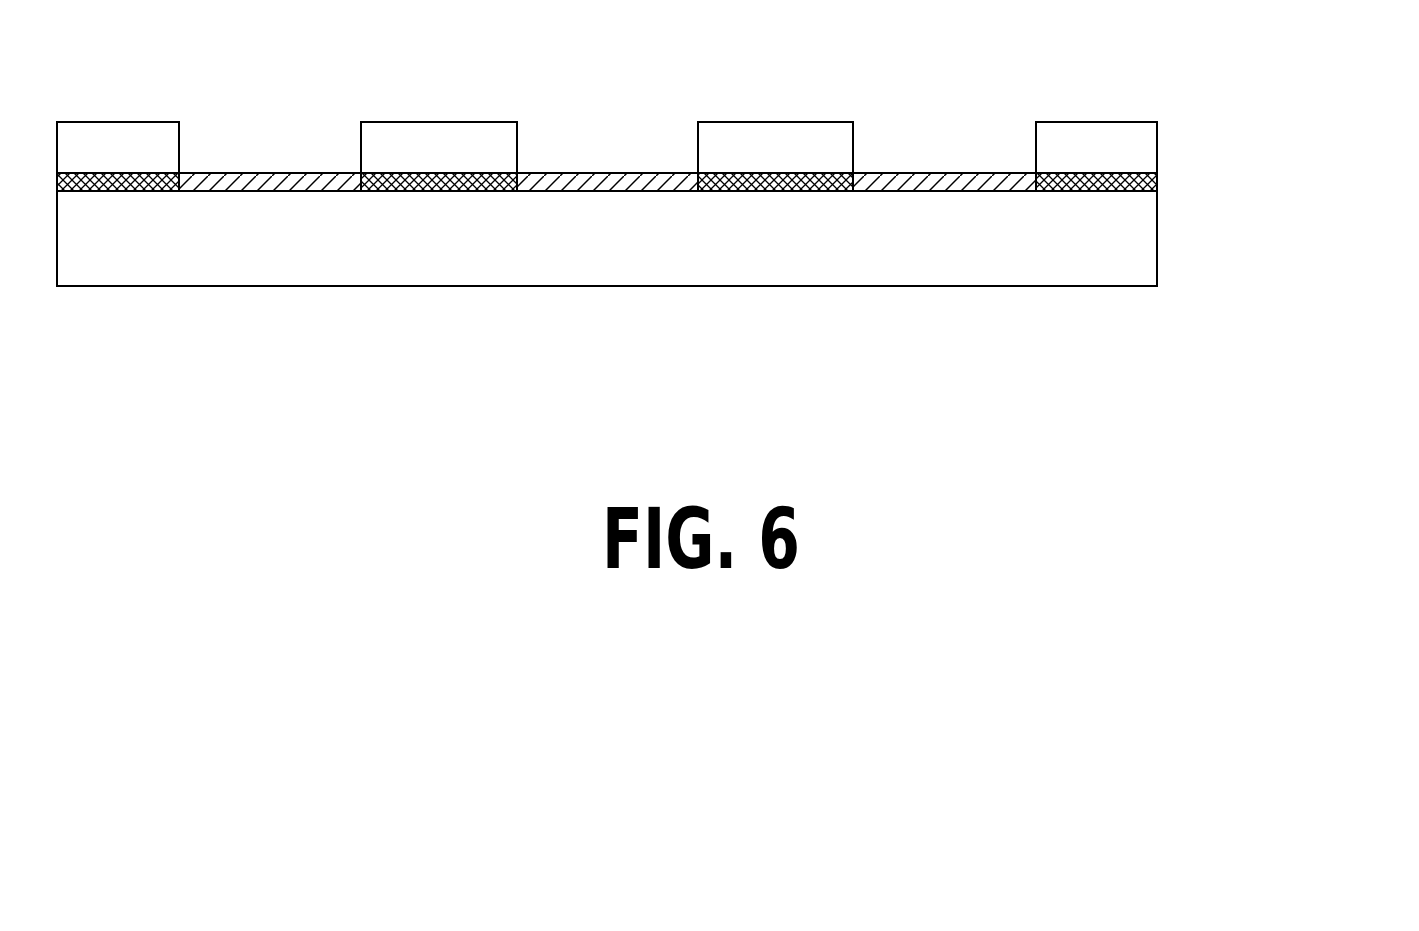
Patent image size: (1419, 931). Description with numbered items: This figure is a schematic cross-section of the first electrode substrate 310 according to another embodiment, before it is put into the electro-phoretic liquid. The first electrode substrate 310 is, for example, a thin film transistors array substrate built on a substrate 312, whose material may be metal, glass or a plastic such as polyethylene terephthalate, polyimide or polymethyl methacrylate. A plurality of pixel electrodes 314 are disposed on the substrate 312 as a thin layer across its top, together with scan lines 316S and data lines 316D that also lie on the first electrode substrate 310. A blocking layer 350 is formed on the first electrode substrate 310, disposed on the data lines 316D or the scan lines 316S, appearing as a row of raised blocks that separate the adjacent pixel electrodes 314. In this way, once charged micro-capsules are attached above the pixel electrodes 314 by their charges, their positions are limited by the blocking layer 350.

The first electrode substrate 310 is at (732, 208).
The substrate 312 is at (1135, 257).
The pixel electrodes 314 is at (1015, 190).
The scan lines 316S is at (455, 182).
The data lines 316D is at (1157, 183).
The blocking layer 350 is at (1103, 130).